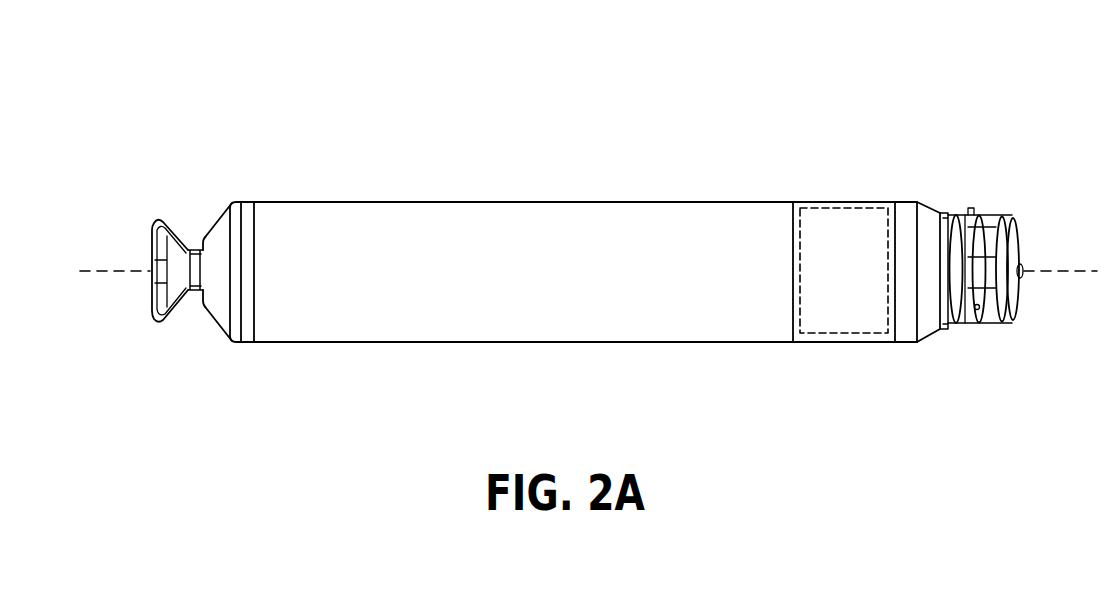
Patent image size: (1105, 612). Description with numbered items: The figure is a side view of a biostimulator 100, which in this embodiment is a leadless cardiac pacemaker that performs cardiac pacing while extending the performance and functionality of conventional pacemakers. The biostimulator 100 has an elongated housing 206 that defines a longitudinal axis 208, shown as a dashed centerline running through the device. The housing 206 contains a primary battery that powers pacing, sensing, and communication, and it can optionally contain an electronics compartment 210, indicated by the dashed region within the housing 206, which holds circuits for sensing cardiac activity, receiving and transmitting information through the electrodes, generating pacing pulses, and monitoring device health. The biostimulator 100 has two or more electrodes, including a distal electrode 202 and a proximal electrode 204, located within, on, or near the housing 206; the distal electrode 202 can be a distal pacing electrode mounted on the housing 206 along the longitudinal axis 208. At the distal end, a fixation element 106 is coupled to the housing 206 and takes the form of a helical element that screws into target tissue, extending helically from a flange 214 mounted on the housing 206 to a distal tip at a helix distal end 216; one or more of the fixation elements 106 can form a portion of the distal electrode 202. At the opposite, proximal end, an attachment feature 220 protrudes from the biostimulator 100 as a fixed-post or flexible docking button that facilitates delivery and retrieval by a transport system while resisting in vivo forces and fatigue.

The biostimulator 100 is at (186, 58).
The fixation element 106 is at (1000, 217).
The distal electrode 202 is at (1018, 275).
The proximal electrode 204 is at (247, 213).
The housing 206 is at (416, 210).
The longitudinal axis 208 is at (128, 269).
The electronics compartment 210 is at (836, 208).
The flange 214 is at (930, 328).
The helix distal end 216 is at (1018, 262).
The attachment feature 220 is at (161, 221).